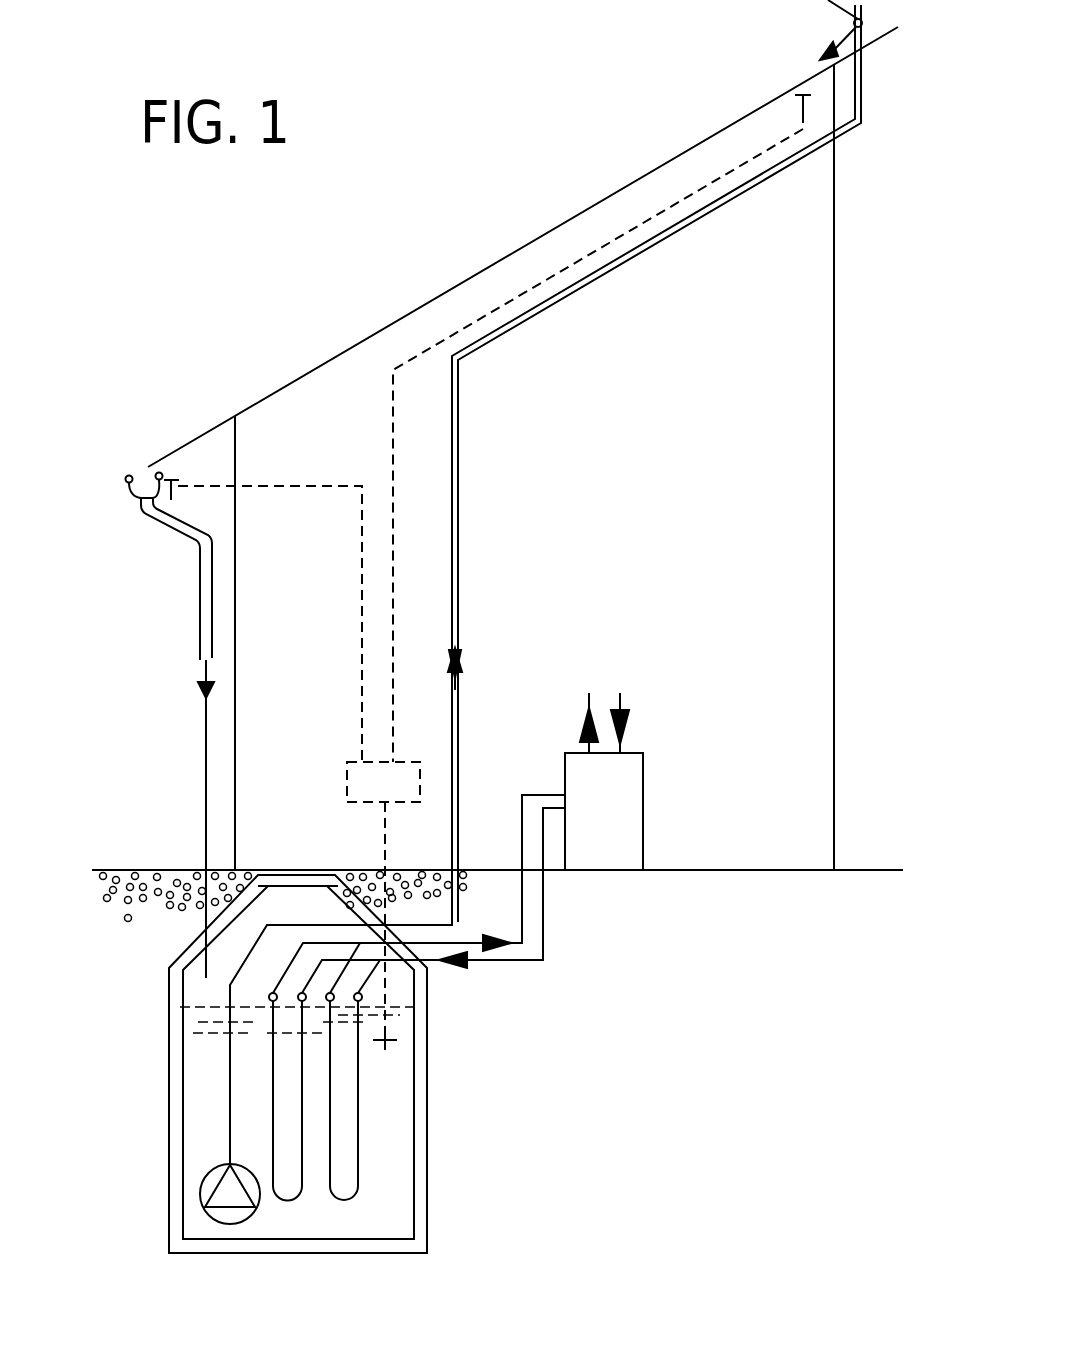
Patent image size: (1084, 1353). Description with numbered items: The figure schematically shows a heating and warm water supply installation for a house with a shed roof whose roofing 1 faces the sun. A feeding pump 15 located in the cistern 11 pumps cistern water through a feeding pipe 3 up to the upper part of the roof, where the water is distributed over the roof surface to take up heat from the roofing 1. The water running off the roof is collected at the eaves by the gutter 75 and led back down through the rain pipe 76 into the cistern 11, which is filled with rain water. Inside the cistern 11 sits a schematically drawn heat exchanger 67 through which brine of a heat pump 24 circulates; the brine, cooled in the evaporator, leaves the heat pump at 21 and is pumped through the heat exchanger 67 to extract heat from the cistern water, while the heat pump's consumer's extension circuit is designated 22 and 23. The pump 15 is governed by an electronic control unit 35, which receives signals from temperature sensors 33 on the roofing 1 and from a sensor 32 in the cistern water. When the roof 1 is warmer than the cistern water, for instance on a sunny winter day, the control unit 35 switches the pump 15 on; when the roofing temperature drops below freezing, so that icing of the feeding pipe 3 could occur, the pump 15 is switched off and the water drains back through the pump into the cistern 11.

The roofing 1 is at (518, 250).
The feeding pipe 3 is at (458, 500).
The temperature sensors 33 is at (808, 97).
The electronic control unit 35 is at (372, 783).
The gutter 75 is at (133, 490).
The downpipe 76 is at (200, 605).
The heat pump 24 is at (622, 805).
The consumer's extension circuit 23 is at (587, 700).
The consumer's extension circuit 22 is at (625, 695).
The brine outlet of heat pump 21 is at (543, 840).
The cistern 11 is at (415, 1082).
The temperature sensor 32 is at (397, 1033).
The heat exchanger 67 is at (318, 1137).
The feeding pump 15 is at (230, 1195).